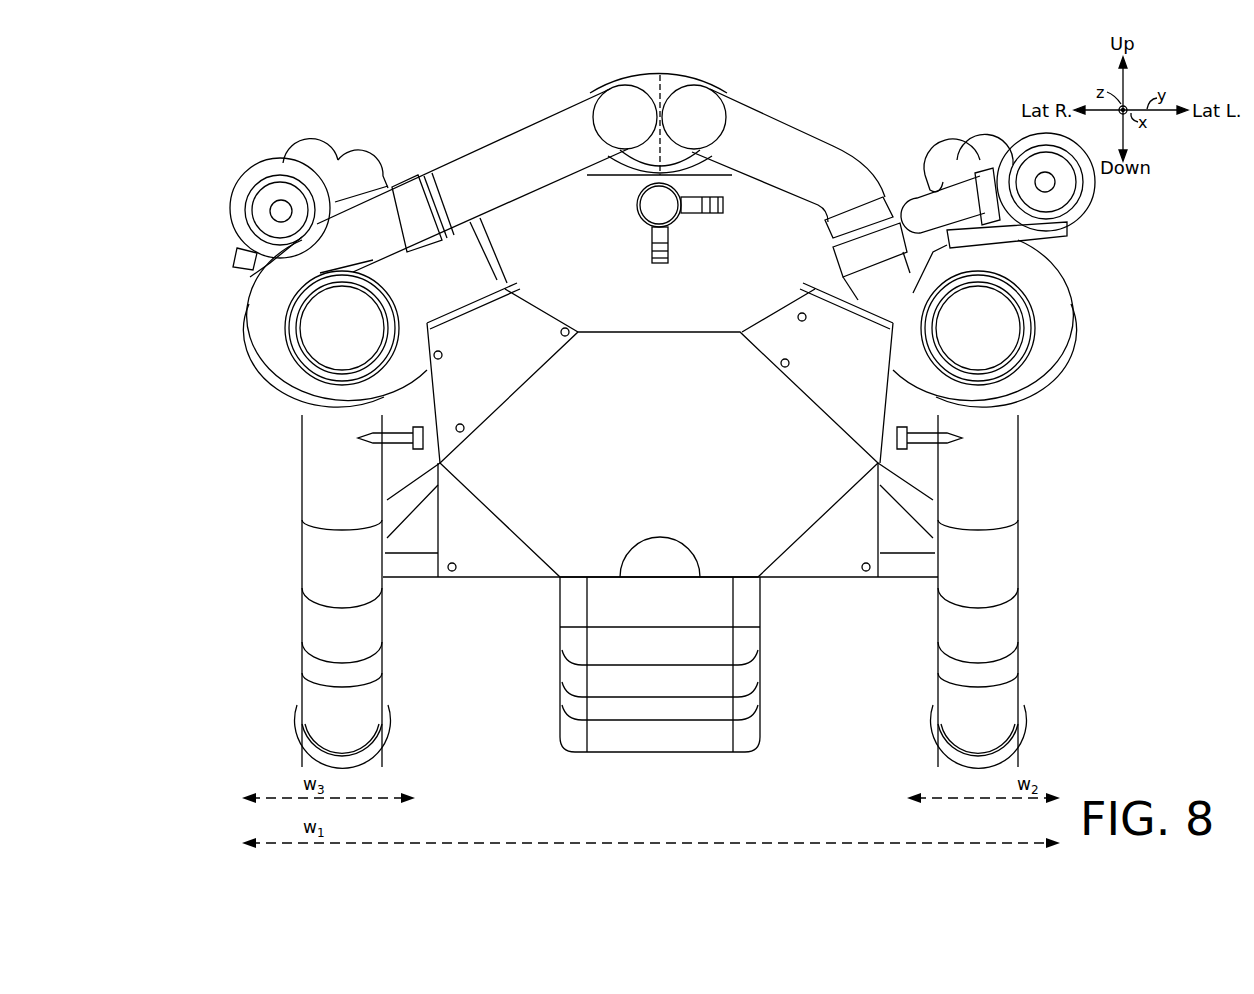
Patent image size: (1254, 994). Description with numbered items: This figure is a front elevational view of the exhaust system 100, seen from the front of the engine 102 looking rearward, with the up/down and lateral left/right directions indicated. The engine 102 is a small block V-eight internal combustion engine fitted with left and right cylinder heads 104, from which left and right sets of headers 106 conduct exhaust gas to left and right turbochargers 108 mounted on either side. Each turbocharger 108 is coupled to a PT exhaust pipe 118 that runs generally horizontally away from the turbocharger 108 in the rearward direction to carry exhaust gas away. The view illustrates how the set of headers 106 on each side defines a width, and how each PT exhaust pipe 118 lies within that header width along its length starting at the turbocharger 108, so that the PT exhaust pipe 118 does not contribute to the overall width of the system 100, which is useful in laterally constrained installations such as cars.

The system 100 is at (247, 80).
The internal combustion engine 102 is at (660, 542).
The cylinder head 104 is at (660, 373).
The set of headers 106 is at (636, 191).
The turbocharger 108 is at (661, 323).
The PT exhaust pipe 118 is at (665, 591).